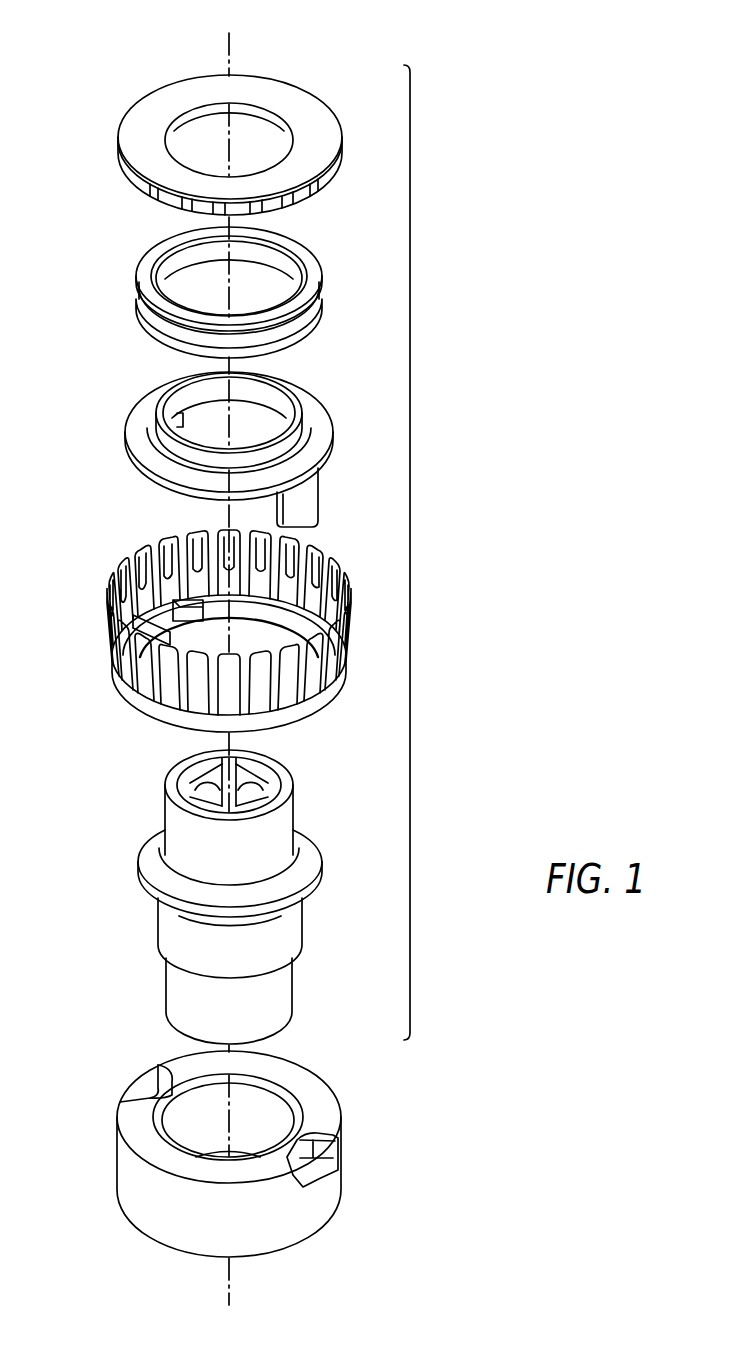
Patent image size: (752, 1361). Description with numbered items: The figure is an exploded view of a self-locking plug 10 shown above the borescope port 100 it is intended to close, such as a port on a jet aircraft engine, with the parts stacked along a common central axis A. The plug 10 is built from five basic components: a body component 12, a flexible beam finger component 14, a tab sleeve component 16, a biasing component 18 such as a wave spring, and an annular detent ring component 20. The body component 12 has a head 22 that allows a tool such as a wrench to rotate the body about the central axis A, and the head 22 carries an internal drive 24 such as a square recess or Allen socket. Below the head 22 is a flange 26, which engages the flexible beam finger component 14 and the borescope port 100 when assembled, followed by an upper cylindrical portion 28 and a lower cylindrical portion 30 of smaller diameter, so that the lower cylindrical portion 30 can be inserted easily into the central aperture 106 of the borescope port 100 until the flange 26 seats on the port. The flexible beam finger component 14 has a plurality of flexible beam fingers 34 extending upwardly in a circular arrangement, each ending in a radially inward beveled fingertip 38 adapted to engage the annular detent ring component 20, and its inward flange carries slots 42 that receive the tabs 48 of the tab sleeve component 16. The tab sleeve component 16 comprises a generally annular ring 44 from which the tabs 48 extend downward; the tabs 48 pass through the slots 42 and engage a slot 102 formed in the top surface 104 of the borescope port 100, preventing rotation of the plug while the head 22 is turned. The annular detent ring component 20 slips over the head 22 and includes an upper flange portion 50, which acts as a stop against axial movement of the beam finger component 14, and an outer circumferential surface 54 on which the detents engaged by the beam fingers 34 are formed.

The central axis A is at (225, 48).
The self-locking plug 10 is at (410, 447).
The body component 12 is at (135, 813).
The flexible beam finger component 14 is at (102, 546).
The tab sleeve component 16 is at (125, 395).
The biasing component 18 is at (143, 240).
The annular detent ring component 20 is at (130, 86).
The head 22 is at (295, 803).
The internal drive 24 is at (267, 782).
The flange 26 is at (307, 858).
The upper cylindrical portion 28 is at (302, 915).
The lower cylindrical portion 30 is at (292, 983).
The flexible beam fingers 34 is at (328, 660).
The beveled fingertip 38 is at (196, 530).
The slots 42 is at (118, 676).
The annular ring 44 is at (312, 415).
The tabs 48 is at (310, 487).
The upper flange portion 50 is at (300, 106).
The outer circumferential surface 54 is at (300, 205).
The borescope port 100 is at (123, 1058).
The slot 102 is at (313, 1158).
The top surface 104 is at (317, 1103).
The central aperture 106 is at (270, 1118).